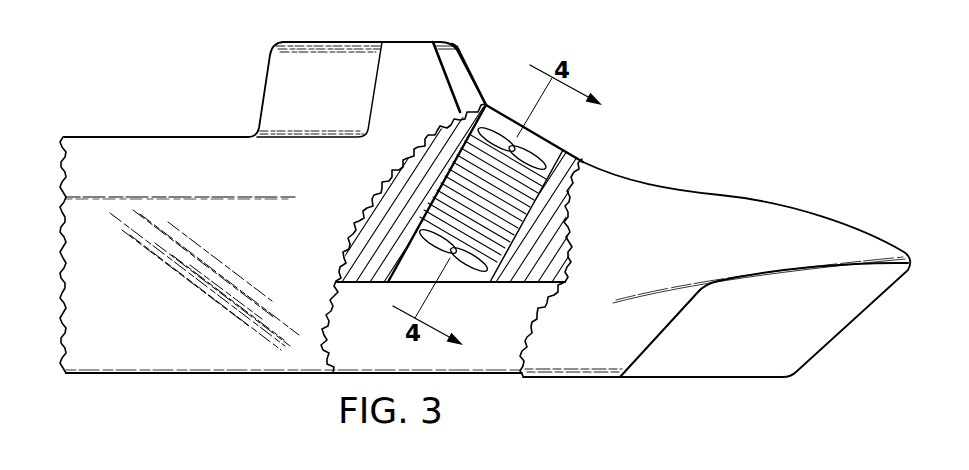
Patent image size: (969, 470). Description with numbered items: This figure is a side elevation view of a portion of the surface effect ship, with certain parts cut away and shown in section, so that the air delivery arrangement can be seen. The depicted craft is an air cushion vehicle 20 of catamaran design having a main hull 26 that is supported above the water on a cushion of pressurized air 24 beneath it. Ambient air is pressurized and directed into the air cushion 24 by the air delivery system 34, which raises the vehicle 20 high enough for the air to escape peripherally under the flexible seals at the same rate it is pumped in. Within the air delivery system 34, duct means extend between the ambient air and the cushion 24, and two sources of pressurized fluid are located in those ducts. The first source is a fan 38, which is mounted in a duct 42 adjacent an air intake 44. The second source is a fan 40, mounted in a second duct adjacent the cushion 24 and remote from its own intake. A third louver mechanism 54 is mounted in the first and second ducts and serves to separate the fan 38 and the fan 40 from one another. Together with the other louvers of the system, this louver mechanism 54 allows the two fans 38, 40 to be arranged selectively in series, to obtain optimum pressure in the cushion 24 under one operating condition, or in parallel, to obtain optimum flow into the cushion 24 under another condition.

The air cushion vehicle 20 is at (740, 171).
The cushion of pressurized air 24 is at (375, 349).
The main hull 26 is at (620, 327).
The air delivery system 34 is at (418, 225).
The fan 38 is at (540, 151).
The fan 40 is at (477, 265).
The duct 42 is at (525, 136).
The air intake 44 is at (497, 123).
The third louver mechanism 54 is at (492, 211).